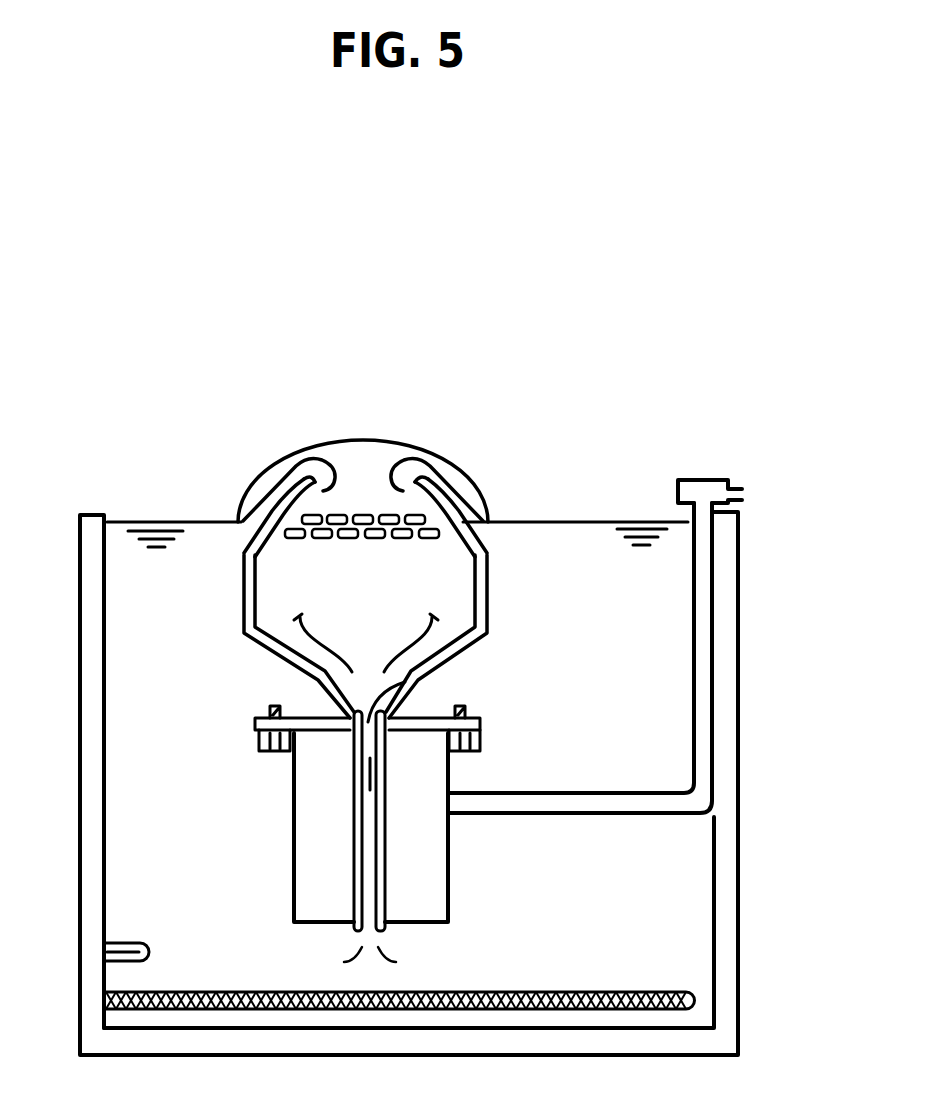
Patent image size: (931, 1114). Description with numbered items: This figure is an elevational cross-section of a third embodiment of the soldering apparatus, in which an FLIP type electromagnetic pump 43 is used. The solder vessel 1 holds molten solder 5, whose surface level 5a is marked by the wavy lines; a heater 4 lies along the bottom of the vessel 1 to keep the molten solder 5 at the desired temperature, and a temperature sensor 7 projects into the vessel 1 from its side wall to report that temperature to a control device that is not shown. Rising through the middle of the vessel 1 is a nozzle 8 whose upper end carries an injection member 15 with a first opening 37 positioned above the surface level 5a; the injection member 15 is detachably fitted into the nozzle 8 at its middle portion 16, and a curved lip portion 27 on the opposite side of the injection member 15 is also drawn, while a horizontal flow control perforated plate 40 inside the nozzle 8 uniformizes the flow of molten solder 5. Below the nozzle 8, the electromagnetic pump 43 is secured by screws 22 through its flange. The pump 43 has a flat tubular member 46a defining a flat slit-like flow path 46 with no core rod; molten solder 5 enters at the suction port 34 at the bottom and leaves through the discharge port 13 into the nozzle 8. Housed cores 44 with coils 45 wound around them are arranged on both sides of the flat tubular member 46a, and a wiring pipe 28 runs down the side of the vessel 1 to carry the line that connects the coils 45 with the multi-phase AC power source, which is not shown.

The solder vessel 1 is at (88, 690).
The heater 4 is at (200, 992).
The molten solder 5 is at (118, 601).
The surface level 5a is at (630, 521).
The temperature sensor 7 is at (123, 942).
The nozzle 8 is at (243, 603).
The discharge port 13 is at (415, 683).
The injection member 15 is at (261, 538).
The middle portion 16 is at (282, 500).
The screws 22 is at (270, 748).
The right deflector lip 27 is at (450, 462).
The wiring pipe 28 is at (712, 607).
The suction port 34 is at (370, 957).
The first opening 37 is at (363, 458).
The flow control perforated plate 40 is at (350, 540).
The FLIP type electromagnetic pump 43 is at (452, 772).
The housed cores 44 is at (432, 856).
The coils 45 is at (432, 903).
The flat slit-like flow path 46 is at (372, 838).
The flat tubular member 46a is at (356, 806).